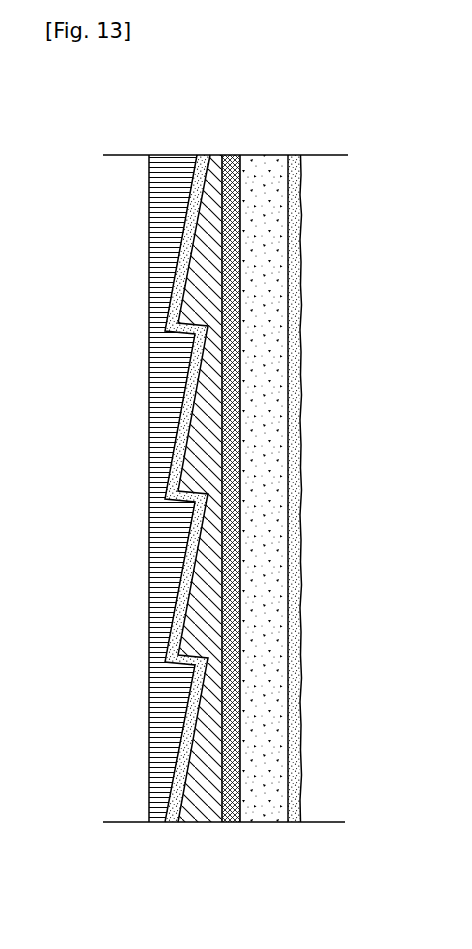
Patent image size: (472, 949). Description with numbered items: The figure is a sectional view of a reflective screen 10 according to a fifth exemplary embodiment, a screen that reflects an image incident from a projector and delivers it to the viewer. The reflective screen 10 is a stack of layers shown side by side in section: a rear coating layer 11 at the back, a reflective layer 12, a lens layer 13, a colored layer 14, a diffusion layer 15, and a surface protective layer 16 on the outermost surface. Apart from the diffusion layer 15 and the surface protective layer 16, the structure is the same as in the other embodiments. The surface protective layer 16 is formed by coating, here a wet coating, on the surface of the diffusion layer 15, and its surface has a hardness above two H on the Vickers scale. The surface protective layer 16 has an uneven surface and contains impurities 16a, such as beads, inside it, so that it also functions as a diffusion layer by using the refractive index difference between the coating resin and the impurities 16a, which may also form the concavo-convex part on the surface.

The reflective screen 10 is at (158, 133).
The rear coating layer 11 is at (155, 235).
The reflective layer 12 is at (176, 287).
The lens layer 13 is at (198, 407).
The colored layer 14 is at (242, 432).
The diffusion layer 15 is at (272, 507).
The surface protective layer 16 is at (302, 560).
The impurities 16a is at (298, 608).